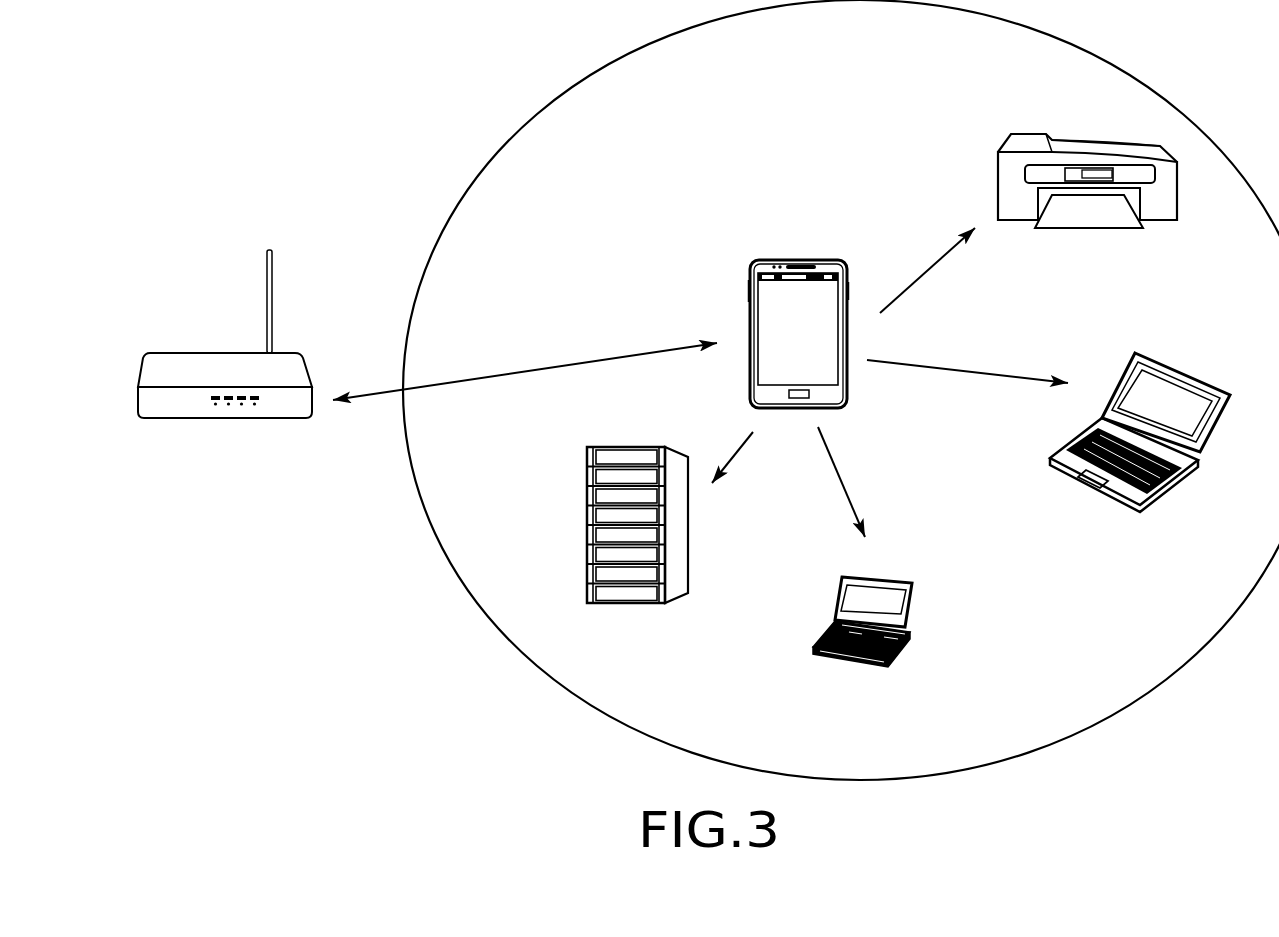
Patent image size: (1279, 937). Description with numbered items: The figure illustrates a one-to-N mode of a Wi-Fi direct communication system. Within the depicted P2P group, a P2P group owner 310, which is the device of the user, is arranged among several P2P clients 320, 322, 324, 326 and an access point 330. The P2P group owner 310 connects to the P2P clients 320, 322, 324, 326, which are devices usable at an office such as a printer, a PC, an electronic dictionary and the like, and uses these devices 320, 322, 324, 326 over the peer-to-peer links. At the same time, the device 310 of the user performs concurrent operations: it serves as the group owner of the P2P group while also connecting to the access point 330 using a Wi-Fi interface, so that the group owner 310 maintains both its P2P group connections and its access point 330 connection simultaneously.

The P2P group owner 310 is at (807, 311).
The P2P client 320 is at (1102, 206).
The P2P client 322 is at (1129, 448).
The P2P client 324 is at (963, 622).
The P2P client 326 is at (640, 565).
The access point 330 is at (226, 363).